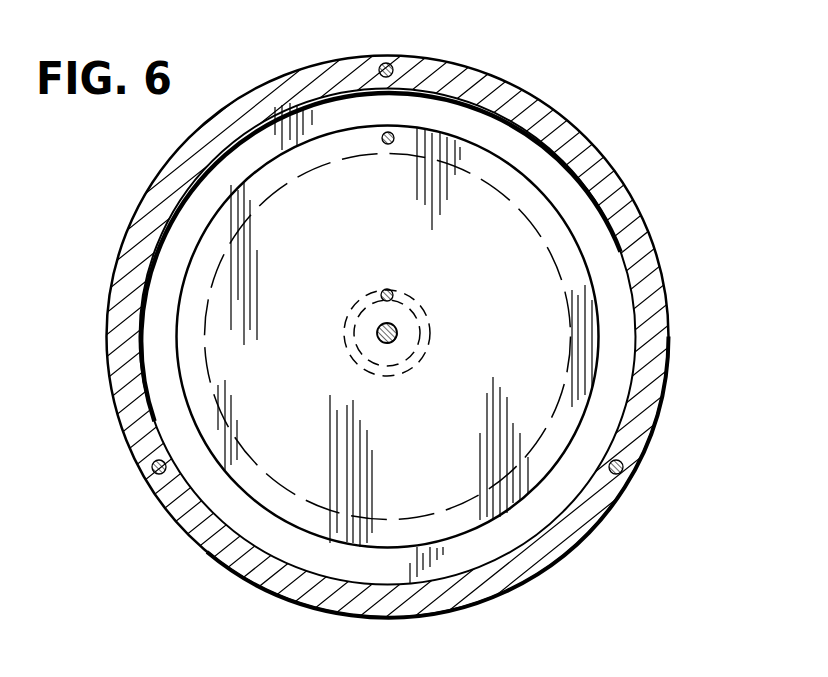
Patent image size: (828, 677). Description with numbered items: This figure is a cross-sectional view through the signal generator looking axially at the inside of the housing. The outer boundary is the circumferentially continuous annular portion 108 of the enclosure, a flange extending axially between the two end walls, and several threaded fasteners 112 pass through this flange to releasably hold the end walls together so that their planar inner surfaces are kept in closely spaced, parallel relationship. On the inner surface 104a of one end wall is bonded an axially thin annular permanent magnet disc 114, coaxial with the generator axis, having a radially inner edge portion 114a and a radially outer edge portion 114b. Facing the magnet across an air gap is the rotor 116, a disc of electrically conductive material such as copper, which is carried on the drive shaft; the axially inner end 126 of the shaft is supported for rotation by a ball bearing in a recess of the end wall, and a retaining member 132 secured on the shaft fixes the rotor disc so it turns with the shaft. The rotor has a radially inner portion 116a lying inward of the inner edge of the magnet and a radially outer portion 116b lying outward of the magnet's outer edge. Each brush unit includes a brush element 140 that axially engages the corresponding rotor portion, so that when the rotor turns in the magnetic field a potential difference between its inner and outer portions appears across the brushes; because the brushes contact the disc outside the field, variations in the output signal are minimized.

The annular portion 108 is at (487, 85).
The threaded fasteners 112 is at (382, 66).
The permanent magnet disc 114 is at (463, 185).
The radially inner edge portion 114a is at (345, 314).
The radially outer edge portion 114b is at (560, 318).
The rotor 116 is at (568, 210).
The radially inner portion of rotor 116a is at (404, 343).
The radially outer portion of rotor 116b is at (590, 352).
The axially inner end of shaft 126 is at (397, 330).
The retaining member 132 is at (366, 337).
The brush element 140 is at (385, 143).
The inner surface of end wall 104a is at (573, 272).